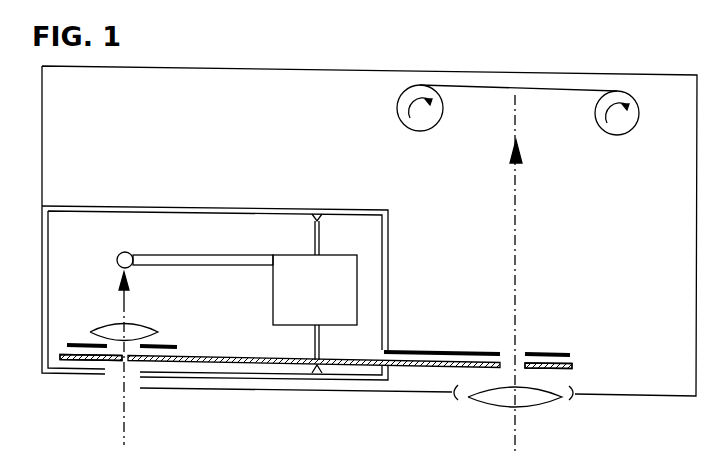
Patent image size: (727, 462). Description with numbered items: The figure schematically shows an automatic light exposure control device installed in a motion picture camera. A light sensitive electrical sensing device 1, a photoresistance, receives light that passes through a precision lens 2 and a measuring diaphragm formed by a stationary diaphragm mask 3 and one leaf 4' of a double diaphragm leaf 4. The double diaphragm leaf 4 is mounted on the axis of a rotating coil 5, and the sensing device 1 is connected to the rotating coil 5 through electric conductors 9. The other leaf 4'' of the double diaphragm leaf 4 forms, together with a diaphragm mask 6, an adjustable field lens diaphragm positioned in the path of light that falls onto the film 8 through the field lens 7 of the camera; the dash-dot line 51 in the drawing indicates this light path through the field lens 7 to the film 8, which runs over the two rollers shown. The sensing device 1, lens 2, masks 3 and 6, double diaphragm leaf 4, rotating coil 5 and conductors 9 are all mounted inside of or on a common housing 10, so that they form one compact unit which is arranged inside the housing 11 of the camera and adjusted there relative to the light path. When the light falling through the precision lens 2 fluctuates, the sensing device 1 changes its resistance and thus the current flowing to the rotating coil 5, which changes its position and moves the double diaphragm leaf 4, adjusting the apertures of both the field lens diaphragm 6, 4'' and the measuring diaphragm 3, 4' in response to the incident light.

The light sensitive electrical sensing device 1 is at (117, 258).
The precision lens 2 is at (128, 342).
The stationary diaphragm mask 3 is at (77, 350).
The double diaphragm leaf 4 is at (316, 397).
The leaf of the double diaphragm leaf 4' is at (91, 395).
The other leaf of the double diaphragm leaf 4'' is at (573, 405).
The rotating coil 5 is at (343, 315).
The diaphragm mask 6 is at (542, 355).
The field lens 7 is at (480, 402).
The film 8 is at (545, 88).
The electric conductors 9 is at (192, 254).
The common housing 10 is at (262, 206).
The housing of the camera 11 is at (370, 70).
The optical axis 51 is at (516, 255).